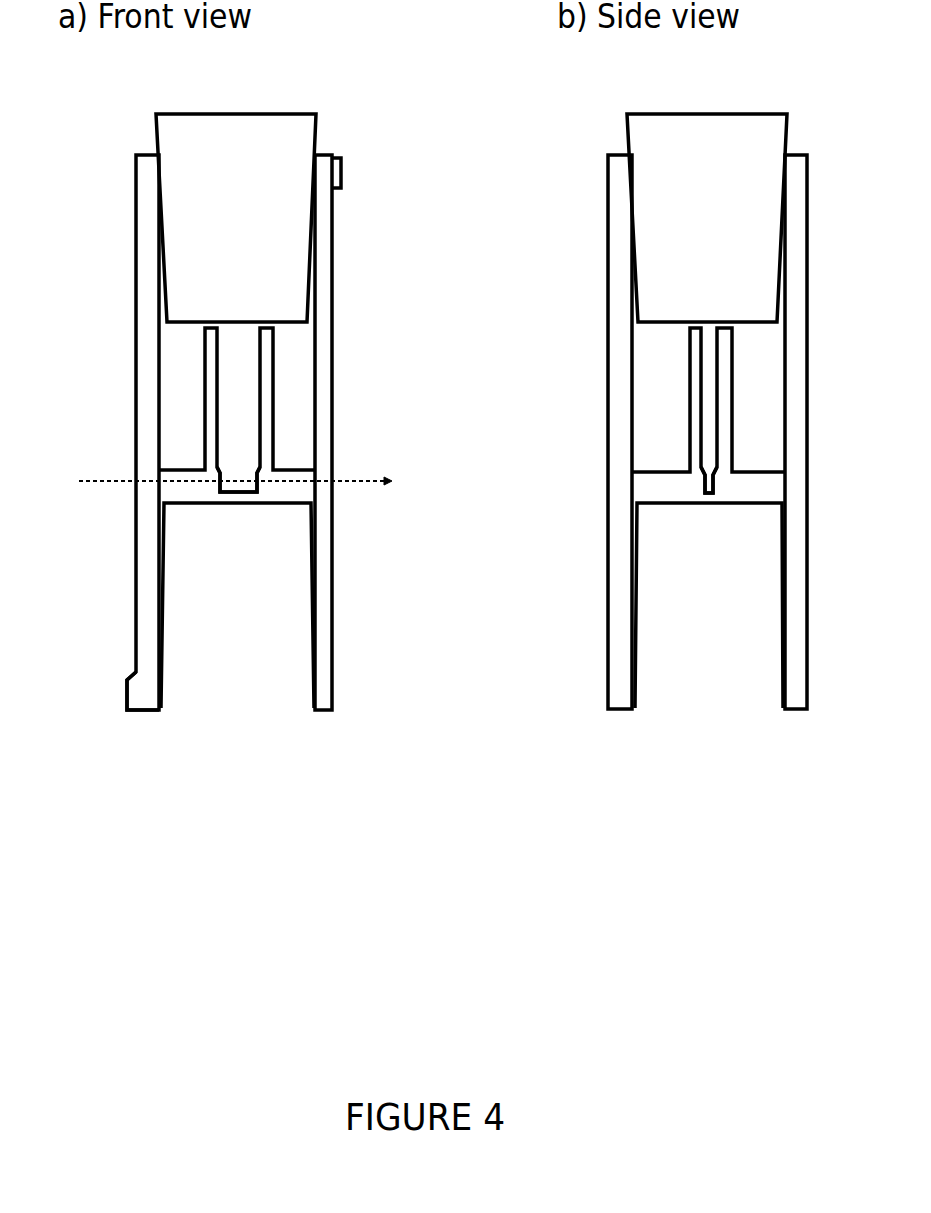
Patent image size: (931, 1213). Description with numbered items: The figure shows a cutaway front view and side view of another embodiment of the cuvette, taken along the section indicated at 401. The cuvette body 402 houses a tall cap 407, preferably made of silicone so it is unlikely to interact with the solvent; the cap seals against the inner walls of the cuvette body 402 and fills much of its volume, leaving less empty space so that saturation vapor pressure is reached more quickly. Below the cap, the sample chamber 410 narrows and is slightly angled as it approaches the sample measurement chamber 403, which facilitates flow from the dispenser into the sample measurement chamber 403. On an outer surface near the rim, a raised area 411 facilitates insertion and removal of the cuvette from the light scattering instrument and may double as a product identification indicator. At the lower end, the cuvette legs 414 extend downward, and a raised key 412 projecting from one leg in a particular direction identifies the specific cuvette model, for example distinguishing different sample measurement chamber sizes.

The section plane / viewing direction 401 is at (100, 489).
The cuvette body 402 is at (149, 217).
The sample measurement chamber 403 is at (243, 488).
The tall cap 407 is at (262, 148).
The sample chamber 410 is at (247, 388).
The raised area 411 is at (333, 175).
The raised key 412 is at (138, 688).
The cuvette legs 414 is at (321, 633).